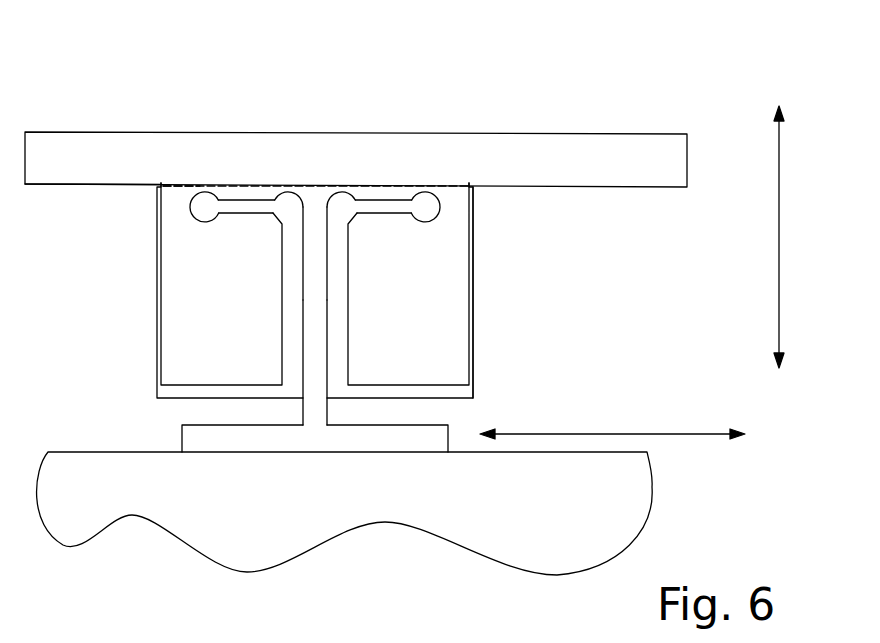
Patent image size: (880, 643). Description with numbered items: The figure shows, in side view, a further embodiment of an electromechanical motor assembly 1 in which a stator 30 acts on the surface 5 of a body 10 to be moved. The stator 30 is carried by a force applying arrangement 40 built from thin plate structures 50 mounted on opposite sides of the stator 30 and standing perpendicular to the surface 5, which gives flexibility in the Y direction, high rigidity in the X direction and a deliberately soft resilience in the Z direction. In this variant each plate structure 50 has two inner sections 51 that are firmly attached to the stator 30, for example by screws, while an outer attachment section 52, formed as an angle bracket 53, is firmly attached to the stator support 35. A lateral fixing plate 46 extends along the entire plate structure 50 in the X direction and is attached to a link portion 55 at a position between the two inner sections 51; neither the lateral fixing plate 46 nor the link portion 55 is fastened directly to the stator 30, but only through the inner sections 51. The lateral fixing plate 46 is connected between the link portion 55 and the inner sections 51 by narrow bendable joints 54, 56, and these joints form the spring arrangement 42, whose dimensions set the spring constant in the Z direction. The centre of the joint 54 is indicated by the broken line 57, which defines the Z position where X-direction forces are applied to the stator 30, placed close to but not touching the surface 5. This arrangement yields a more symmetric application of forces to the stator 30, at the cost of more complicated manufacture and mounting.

The electromechanical motor assembly 1 is at (587, 107).
The surface of the body to be moved 5 is at (55, 187).
The body to be moved 10 is at (87, 150).
The stator 30 is at (155, 398).
The stator support 35 is at (62, 513).
The force applying arrangement 40 is at (553, 323).
The spring arrangement 42 is at (482, 112).
The lateral fixing plate 46 is at (245, 192).
The plate structure 50 is at (442, 303).
The inner section 51 is at (185, 303).
The outer attachment section 52 is at (333, 440).
The angle bracket 53 is at (240, 438).
The bendable joint 54 is at (197, 185).
The link portion 55 is at (317, 280).
The bendable joint 56 is at (285, 185).
The broken line 57 is at (173, 185).